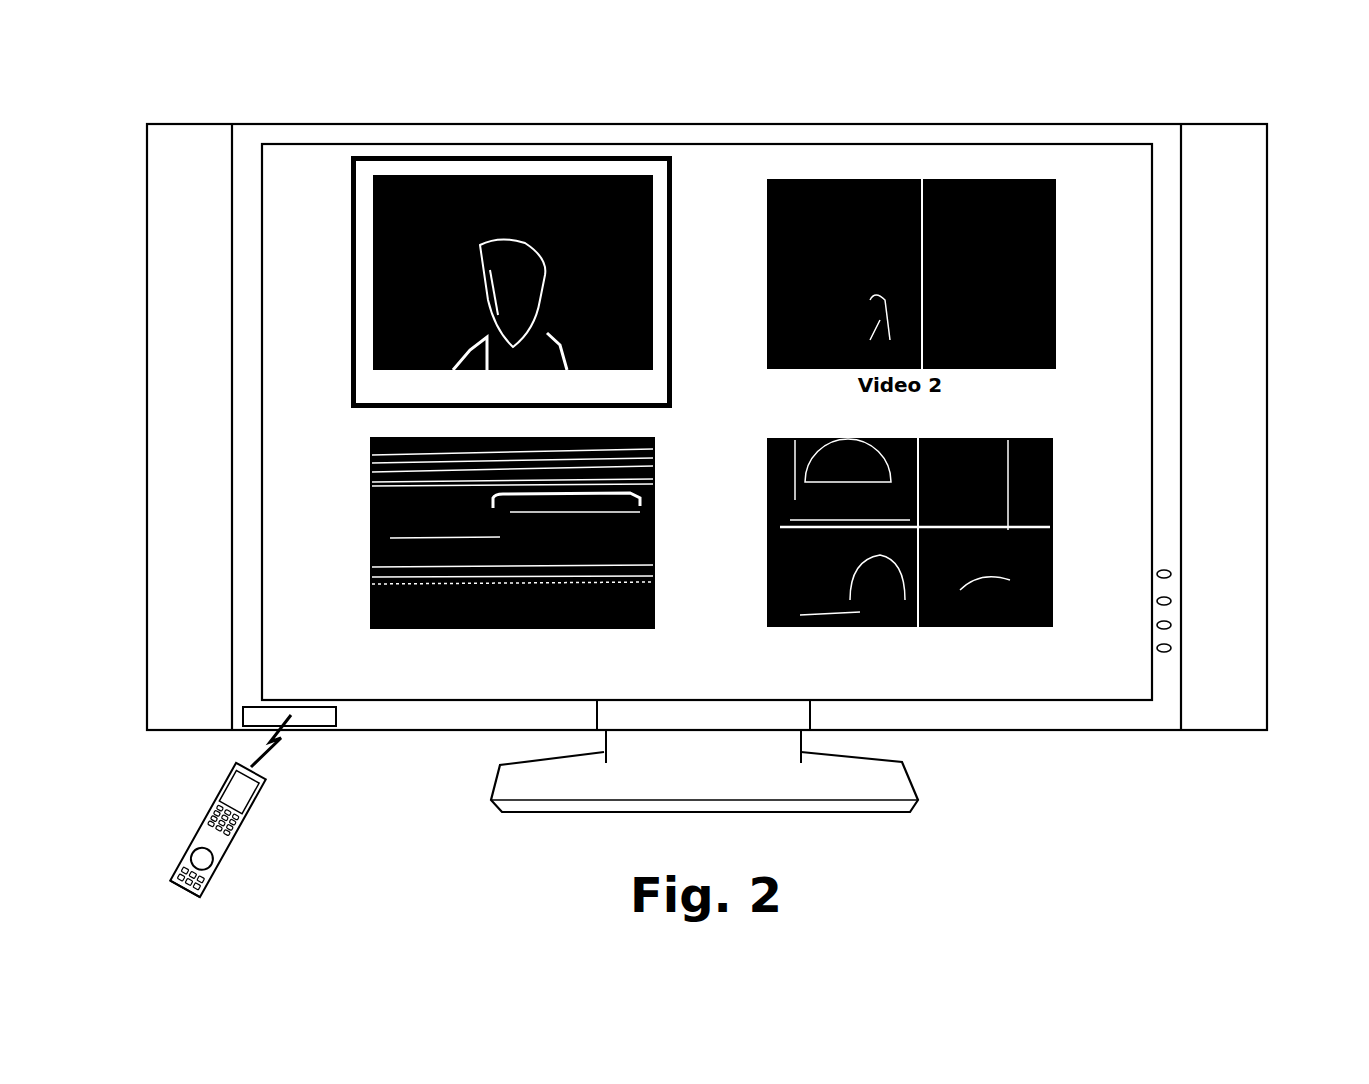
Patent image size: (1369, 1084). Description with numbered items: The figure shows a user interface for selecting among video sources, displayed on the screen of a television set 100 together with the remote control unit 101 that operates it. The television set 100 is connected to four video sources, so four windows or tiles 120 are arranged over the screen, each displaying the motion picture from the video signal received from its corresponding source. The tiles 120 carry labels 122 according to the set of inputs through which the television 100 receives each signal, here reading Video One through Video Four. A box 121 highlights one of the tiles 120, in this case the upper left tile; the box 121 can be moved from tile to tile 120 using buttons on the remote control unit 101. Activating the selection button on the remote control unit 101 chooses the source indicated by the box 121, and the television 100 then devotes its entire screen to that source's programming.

The television set 100 is at (1215, 703).
The remote control unit 101 is at (202, 806).
The windows or tiles 120 is at (672, 657).
The box 121 is at (395, 155).
The labels 122 is at (918, 653).